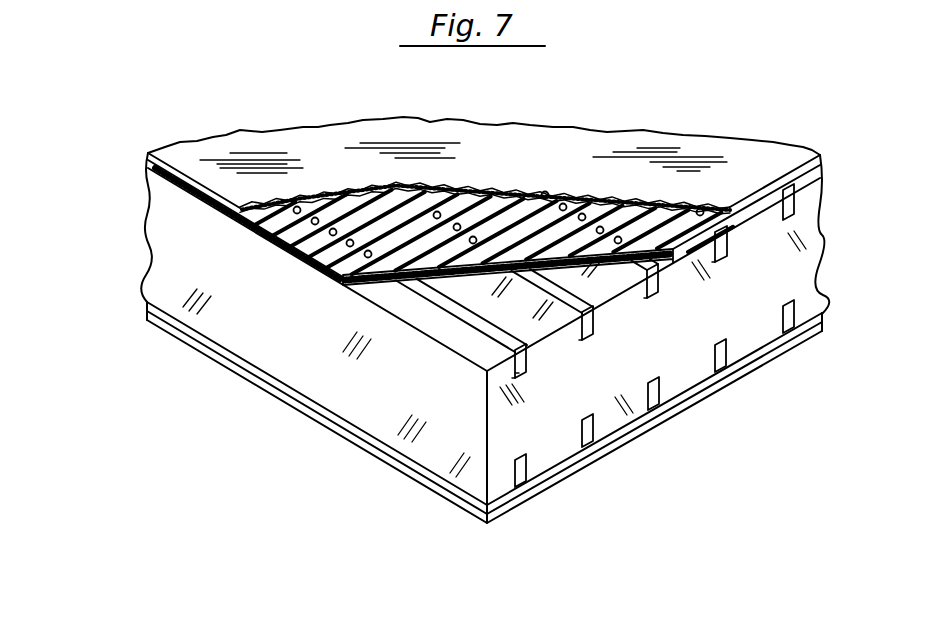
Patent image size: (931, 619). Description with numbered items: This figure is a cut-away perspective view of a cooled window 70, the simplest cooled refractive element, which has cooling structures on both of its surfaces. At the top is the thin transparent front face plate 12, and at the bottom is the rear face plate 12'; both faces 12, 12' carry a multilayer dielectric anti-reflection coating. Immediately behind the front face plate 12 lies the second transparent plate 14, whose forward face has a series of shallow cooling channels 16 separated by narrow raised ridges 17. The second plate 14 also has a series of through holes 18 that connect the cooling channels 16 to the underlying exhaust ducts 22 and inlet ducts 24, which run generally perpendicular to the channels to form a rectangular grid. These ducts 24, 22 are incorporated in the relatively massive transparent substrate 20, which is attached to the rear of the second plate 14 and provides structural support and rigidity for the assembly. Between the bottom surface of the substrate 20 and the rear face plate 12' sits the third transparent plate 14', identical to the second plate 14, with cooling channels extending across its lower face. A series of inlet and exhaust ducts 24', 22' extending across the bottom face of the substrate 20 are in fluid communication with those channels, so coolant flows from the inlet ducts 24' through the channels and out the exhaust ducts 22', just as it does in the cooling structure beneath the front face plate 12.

The sandwich panel assembly 70 is at (129, 239).
The transparent plate 12 is at (484, 143).
The rear face plate 12' is at (484, 412).
The second transparent plate 14 is at (484, 246).
The third transparent plate 14' is at (484, 403).
The cooling channels 16 is at (330, 250).
The raised ridges 17 is at (285, 226).
The through holes 18 is at (450, 222).
The transparent substrate 20 is at (392, 395).
The exhaust ducts 22 is at (640, 295).
The inlet ducts 24 is at (595, 291).
The exhaust ducts 22' is at (597, 415).
The inlet ducts 24' is at (686, 373).